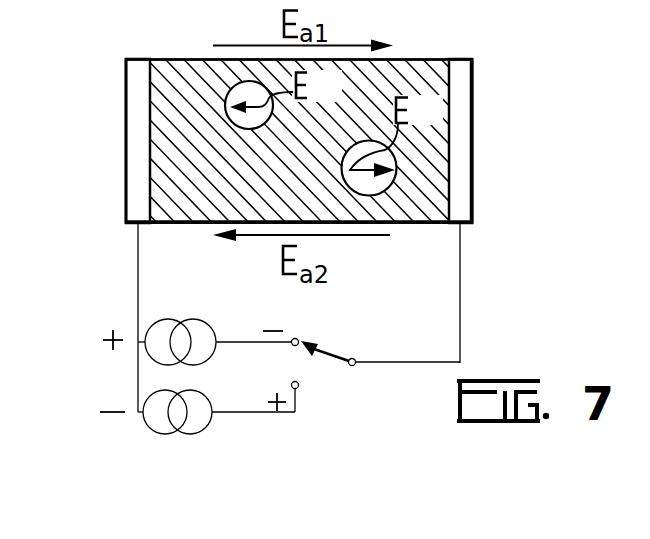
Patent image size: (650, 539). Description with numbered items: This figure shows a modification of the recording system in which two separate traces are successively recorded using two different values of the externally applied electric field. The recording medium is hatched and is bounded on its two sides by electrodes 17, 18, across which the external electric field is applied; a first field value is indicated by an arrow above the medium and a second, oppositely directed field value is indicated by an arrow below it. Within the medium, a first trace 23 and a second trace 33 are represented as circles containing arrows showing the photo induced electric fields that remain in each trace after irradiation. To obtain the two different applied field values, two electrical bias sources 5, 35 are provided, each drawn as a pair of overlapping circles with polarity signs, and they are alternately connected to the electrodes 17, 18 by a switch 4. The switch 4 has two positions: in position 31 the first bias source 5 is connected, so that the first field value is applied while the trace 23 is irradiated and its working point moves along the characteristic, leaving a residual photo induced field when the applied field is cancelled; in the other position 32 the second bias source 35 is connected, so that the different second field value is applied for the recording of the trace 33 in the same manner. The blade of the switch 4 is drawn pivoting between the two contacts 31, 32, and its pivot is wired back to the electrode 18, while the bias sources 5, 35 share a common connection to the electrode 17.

The electrode 17 is at (126, 176).
The electrode 18 is at (473, 178).
The trace 23 is at (226, 98).
The trace 33 is at (348, 188).
The electrical bias source 5 is at (215, 322).
The electrical bias source 35 is at (218, 395).
The switch position 31 is at (299, 337).
The switch position 32 is at (299, 389).
The switch 4 is at (348, 364).